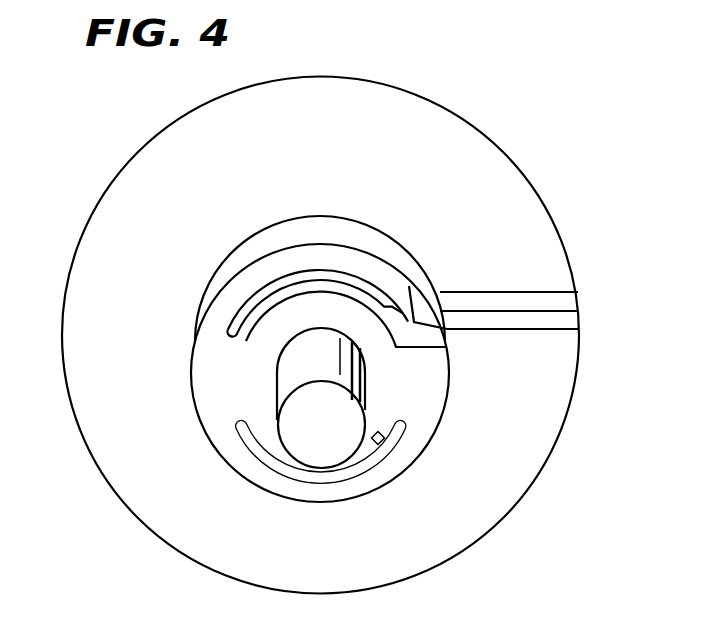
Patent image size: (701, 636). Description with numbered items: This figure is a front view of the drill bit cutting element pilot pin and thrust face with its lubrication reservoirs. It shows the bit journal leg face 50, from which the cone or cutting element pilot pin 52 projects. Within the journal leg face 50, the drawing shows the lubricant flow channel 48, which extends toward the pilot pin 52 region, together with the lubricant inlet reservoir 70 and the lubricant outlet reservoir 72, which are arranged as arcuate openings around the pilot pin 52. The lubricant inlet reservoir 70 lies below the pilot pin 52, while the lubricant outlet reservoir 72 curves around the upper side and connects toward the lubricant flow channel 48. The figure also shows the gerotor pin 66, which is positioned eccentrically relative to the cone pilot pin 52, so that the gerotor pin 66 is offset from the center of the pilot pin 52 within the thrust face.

The bit journal leg face 50 is at (379, 105).
The cone pilot pin 52 is at (228, 247).
The lubricant outlet reservoir 72 is at (360, 292).
The lubricant flow channel 48 is at (575, 318).
The gerotor pin 66 is at (352, 427).
The lubricant inlet reservoir 70 is at (290, 481).